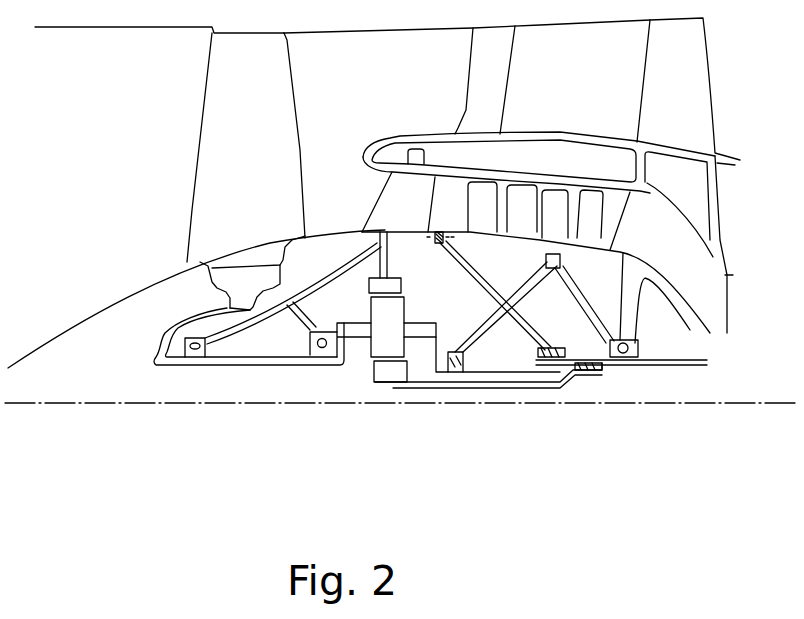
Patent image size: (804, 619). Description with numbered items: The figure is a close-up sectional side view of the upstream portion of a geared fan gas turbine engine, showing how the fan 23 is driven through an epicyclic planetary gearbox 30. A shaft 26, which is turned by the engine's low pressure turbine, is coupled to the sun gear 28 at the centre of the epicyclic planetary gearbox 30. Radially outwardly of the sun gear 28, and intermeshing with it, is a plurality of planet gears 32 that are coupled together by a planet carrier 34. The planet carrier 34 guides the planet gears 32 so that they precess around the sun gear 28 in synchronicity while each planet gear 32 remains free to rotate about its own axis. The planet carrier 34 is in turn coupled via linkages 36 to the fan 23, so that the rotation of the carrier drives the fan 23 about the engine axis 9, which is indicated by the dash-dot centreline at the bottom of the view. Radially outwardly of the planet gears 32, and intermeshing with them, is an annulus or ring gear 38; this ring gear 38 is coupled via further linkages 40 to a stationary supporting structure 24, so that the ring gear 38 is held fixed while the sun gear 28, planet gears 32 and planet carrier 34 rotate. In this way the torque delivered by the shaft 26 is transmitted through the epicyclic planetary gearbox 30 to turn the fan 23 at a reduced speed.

The engine axis 9 is at (178, 403).
The fan 23 is at (215, 152).
The stationary supporting structure 24 is at (397, 200).
The shaft 26 is at (522, 383).
The sun gear 28 is at (383, 381).
The epicyclic planetary gearbox 30 is at (345, 348).
The planet gears 32 is at (375, 350).
The planet carrier 34 is at (430, 368).
The linkages 36 is at (334, 362).
The ring gear 38 is at (370, 287).
The linkages 40 is at (390, 265).